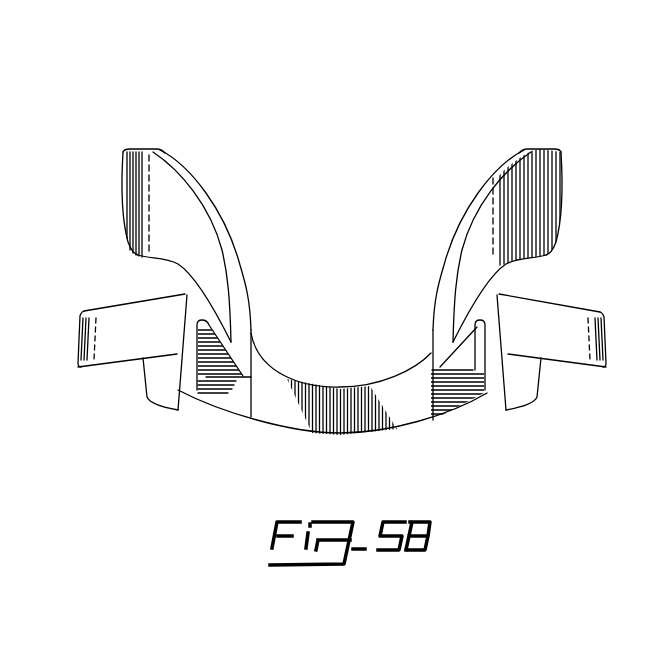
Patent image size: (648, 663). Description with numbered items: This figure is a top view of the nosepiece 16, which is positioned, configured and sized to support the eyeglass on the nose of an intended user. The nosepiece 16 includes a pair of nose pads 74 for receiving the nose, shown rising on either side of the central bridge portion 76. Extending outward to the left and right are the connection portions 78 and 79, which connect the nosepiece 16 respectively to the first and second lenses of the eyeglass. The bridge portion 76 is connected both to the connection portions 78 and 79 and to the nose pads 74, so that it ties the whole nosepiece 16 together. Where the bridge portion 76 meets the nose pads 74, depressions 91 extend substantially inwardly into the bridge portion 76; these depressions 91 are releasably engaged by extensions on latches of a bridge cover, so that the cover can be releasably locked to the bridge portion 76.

The nosepiece 16 is at (343, 199).
The nose pads 74 is at (189, 152).
The bridge portion 76 is at (395, 427).
The connection portion 78 is at (103, 313).
The connection portion 79 is at (553, 303).
The depression 91 is at (230, 357).